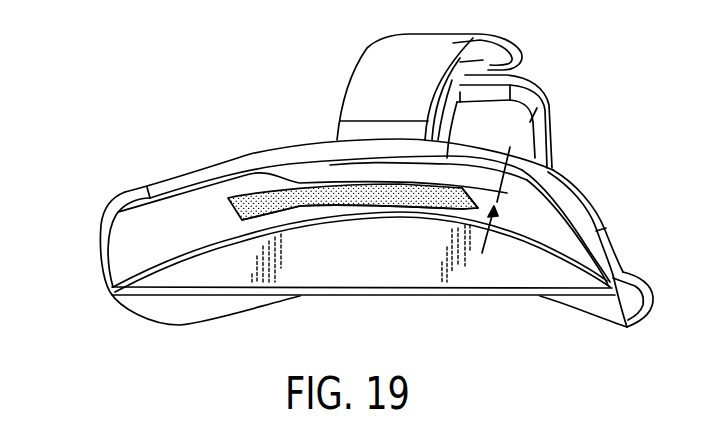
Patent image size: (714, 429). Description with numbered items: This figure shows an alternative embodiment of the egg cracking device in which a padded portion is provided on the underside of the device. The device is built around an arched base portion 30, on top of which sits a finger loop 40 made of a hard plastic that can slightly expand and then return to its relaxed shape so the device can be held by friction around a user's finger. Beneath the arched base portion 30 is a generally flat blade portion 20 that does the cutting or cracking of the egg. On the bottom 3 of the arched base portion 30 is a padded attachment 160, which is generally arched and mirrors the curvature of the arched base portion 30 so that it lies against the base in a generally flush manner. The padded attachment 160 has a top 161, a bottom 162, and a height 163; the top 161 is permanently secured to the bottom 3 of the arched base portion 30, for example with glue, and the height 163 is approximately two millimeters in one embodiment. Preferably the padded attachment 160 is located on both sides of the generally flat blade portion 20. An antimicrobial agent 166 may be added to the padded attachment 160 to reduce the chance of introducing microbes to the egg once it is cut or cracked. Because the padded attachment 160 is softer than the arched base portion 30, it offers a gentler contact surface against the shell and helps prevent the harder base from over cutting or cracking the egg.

The bottom of the arched base portion 3 is at (133, 240).
The generally flat blade portion 20 is at (510, 263).
The arched base portion 30 is at (215, 170).
The finger loop 40 is at (383, 63).
The padded attachment 160 is at (413, 207).
The top of the padded attachment 161 is at (300, 188).
The bottom of the padded attachment 162 is at (290, 216).
The height of the padded attachment 163 is at (503, 202).
The antimicrobial agent 166 is at (340, 208).